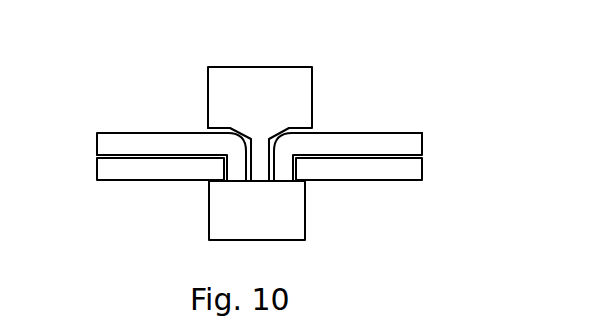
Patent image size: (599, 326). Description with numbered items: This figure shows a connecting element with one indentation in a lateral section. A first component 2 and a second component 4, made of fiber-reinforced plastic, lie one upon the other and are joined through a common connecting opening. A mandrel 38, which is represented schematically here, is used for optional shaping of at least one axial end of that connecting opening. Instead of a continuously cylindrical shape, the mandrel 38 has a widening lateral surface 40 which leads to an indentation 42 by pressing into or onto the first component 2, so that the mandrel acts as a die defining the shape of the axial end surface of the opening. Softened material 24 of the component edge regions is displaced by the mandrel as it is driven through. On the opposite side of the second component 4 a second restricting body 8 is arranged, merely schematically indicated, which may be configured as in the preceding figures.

The first component 2 is at (412, 137).
The second component 4 is at (412, 172).
The second restricting body 8 is at (227, 212).
The softened material 24 is at (237, 153).
The mandrel 38 is at (301, 92).
The widening lateral surface 40 is at (240, 121).
The indentation 42 is at (298, 149).